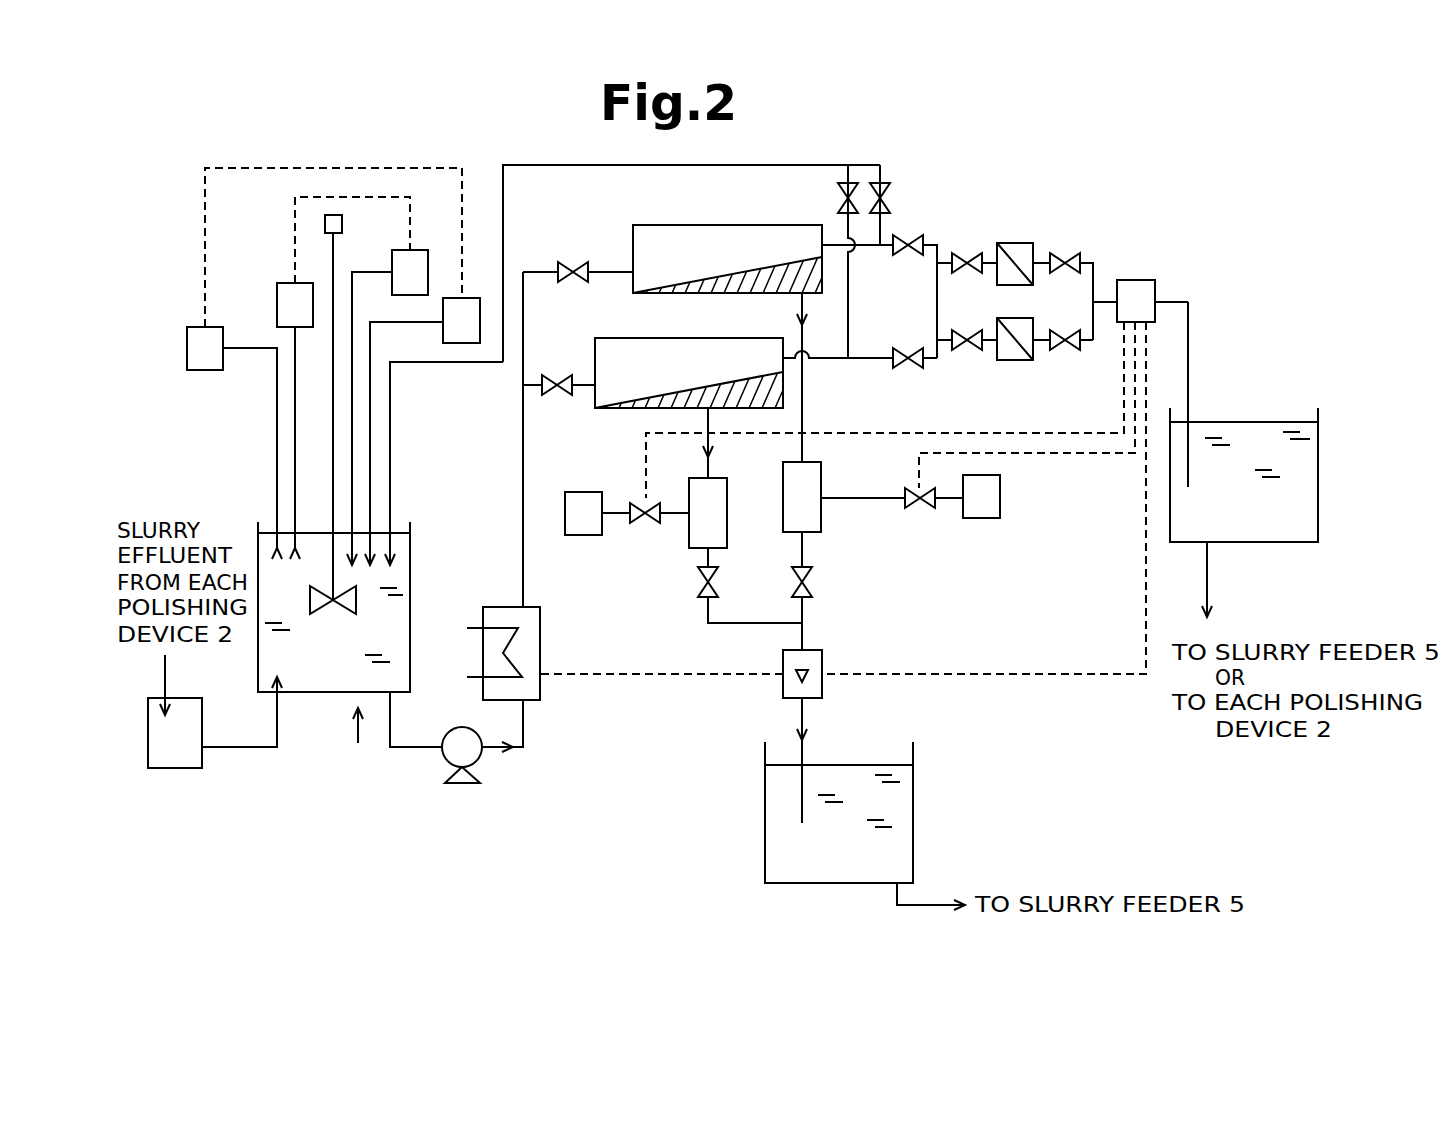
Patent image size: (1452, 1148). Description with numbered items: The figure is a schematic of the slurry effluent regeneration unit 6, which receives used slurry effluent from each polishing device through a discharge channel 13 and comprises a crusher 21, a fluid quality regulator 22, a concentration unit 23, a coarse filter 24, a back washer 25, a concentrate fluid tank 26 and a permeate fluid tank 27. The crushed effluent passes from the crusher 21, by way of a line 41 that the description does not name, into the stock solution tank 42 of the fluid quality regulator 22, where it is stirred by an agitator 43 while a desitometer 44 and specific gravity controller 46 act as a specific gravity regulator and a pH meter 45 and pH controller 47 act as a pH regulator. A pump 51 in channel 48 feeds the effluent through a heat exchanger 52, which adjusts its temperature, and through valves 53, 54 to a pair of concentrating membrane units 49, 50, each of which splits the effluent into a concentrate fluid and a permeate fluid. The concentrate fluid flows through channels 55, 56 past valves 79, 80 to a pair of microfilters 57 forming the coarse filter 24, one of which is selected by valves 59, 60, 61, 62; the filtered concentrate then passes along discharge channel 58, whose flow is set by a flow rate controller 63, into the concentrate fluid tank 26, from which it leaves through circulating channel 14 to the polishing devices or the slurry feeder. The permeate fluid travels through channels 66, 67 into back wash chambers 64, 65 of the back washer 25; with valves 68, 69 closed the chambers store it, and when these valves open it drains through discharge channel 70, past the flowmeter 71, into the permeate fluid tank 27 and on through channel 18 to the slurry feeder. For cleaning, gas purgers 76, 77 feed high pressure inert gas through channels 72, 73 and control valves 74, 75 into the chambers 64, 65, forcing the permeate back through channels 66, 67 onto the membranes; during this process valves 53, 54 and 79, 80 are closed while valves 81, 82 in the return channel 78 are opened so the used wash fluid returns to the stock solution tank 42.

The slurry effluent regeneration unit 6 is at (612, 730).
The discharge channel 13 is at (165, 678).
The circulating channel 14 is at (1207, 580).
The channel 18 is at (897, 895).
The crusher 21 is at (183, 782).
The fluid quality regulator 22 is at (357, 742).
The concentration unit 23 is at (678, 294).
The coarse filter 24 is at (1019, 289).
The back washer 25 is at (807, 615).
The concentrate fluid tank 26 is at (1318, 542).
The permeate fluid tank 27 is at (913, 784).
The slurry transfer pipe 41 is at (277, 740).
The stock solution tank 42 is at (410, 565).
The agitator 43 is at (340, 252).
The desitometer 44 is at (277, 298).
The pH meter 45 is at (187, 340).
The specific gravity controller 46 is at (428, 262).
The pH controller 47 is at (480, 310).
The channel 48 is at (523, 408).
The concentrating membrane unit 49 is at (700, 225).
The concentrating membrane unit 50 is at (685, 338).
The pump 51 is at (447, 766).
The heat exchanger 52 is at (490, 606).
The valve 53 is at (570, 262).
The valve 54 is at (552, 376).
The channel 55 is at (873, 250).
The channel 56 is at (873, 364).
The microfilter 57 is at (1015, 241).
The discharge channel 58 is at (1188, 366).
The valve 59 is at (970, 250).
The valve 60 is at (1072, 252).
The valve 61 is at (968, 350).
The valve 62 is at (1073, 350).
The flow rate controller 63 is at (1141, 279).
The back wash chamber 64 is at (821, 485).
The back wash chamber 65 is at (727, 510).
The channel 66 is at (802, 400).
The channel 67 is at (708, 450).
The valve 68 is at (808, 586).
The valve 69 is at (698, 588).
The discharge channel 70 is at (802, 716).
The flowmeter 71 is at (822, 665).
The channel 72 is at (852, 503).
The channel 73 is at (622, 505).
The control valve 74 is at (921, 505).
The control valve 75 is at (640, 525).
The gas purger 76 is at (1000, 500).
The gas purger 77 is at (580, 492).
The return channel 78 is at (535, 165).
The valve 79 is at (913, 235).
The valve 80 is at (910, 372).
The valve 81 is at (890, 186).
The valve 82 is at (838, 196).